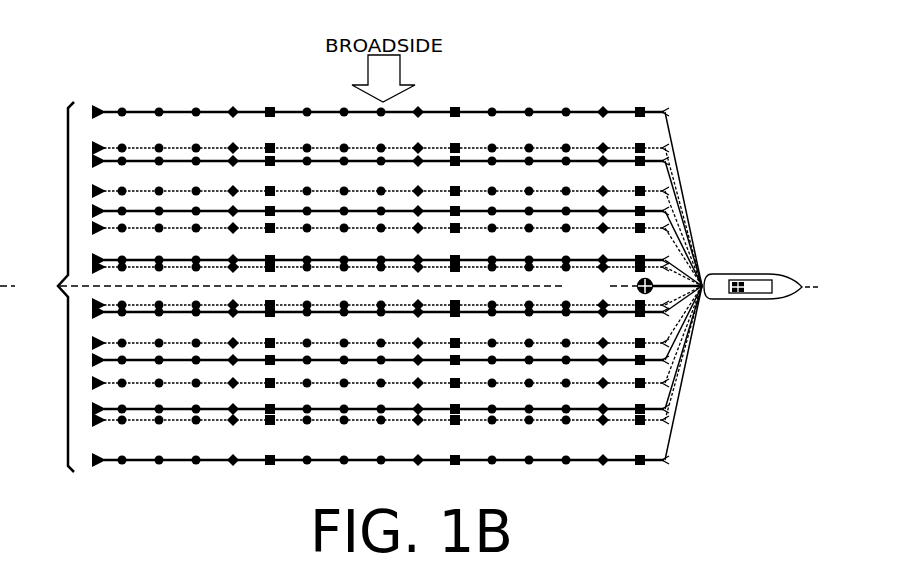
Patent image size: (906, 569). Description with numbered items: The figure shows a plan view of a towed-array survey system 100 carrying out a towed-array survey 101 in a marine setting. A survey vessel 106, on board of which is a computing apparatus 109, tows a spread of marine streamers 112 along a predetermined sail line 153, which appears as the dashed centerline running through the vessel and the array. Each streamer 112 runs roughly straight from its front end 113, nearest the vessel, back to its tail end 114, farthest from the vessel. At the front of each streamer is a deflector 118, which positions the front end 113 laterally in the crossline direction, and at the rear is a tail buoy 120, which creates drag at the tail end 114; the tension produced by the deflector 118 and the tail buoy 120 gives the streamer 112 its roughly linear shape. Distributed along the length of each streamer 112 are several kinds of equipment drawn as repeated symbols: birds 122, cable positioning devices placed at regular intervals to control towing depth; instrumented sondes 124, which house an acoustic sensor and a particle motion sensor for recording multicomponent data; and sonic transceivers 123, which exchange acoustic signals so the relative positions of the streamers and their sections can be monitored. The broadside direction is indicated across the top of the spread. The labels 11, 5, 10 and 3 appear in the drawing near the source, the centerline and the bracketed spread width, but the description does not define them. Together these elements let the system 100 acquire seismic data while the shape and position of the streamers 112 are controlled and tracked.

The towed-array survey system 100 is at (729, 200).
The towed-array survey 101 is at (714, 76).
The survey vessel 106 is at (748, 273).
The computing apparatus 109 is at (744, 300).
The sail line 153 is at (810, 292).
The deflector 118 is at (668, 114).
The front end 113 is at (661, 103).
The birds 122 is at (634, 107).
The sonic transceivers 123 is at (421, 108).
The instrumented sondes 124 is at (527, 109).
The tail buoy 120 is at (103, 109).
The tail end 114 is at (113, 118).
The marine streamers 112 is at (218, 462).
The seismic source 11 is at (642, 278).
The centerline / tow direction 5 is at (318, 296).
The spread width 10 is at (52, 287).
The streamer array 3 is at (52, 287).